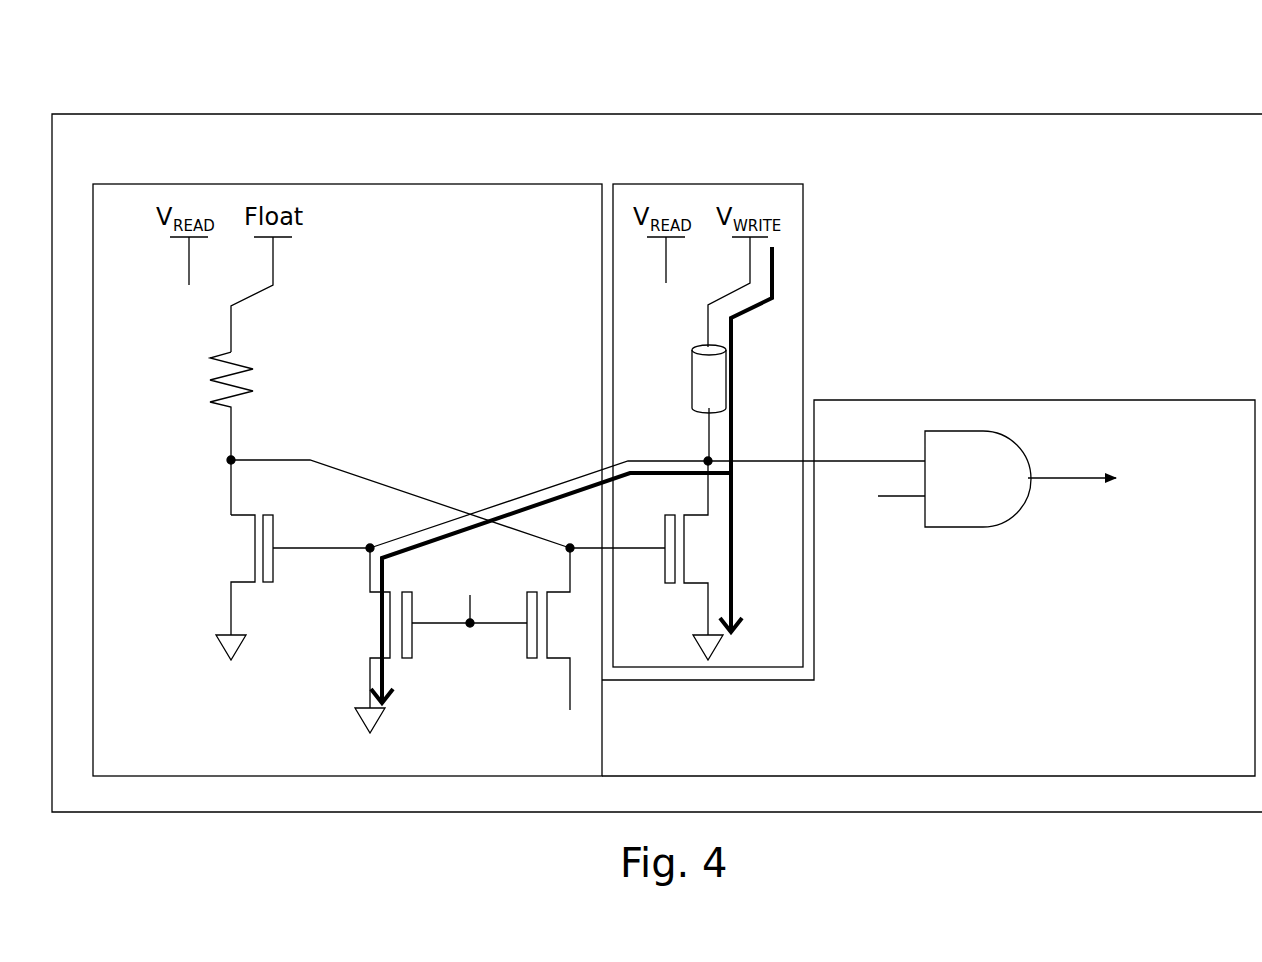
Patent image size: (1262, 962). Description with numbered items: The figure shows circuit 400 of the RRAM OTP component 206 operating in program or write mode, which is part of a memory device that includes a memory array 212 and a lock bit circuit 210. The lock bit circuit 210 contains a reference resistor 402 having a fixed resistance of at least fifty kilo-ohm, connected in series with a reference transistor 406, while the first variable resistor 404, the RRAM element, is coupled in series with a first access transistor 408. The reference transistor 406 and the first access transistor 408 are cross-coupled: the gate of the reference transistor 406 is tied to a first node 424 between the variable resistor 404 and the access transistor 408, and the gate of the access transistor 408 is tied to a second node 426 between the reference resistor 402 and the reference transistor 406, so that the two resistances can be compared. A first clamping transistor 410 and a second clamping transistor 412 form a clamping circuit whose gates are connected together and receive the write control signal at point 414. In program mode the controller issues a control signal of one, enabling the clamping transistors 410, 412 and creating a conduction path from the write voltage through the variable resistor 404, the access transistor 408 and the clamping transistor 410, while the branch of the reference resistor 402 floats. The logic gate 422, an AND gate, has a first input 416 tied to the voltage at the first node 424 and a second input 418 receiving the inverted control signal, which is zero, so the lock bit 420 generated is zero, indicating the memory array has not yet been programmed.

The circuit 400 is at (690, 48).
The RRAM OTP component 206 is at (1050, 113).
The lock bit circuit 210 is at (343, 184).
The memory array 212 is at (703, 184).
The reference resistor 402 is at (278, 352).
The first variable resistor 404 is at (680, 353).
The reference transistor 406 is at (210, 573).
The first access transistor 408 is at (727, 573).
The first clamping transistor 410 is at (360, 640).
The second clamping transistor 412 is at (580, 642).
The control signal application point 414 is at (465, 640).
The first input 416 is at (872, 461).
The second input 418 is at (908, 497).
The lock bit 420 is at (1066, 478).
The logic gate 422 is at (953, 528).
The first node 424 is at (698, 457).
The second node 426 is at (222, 460).